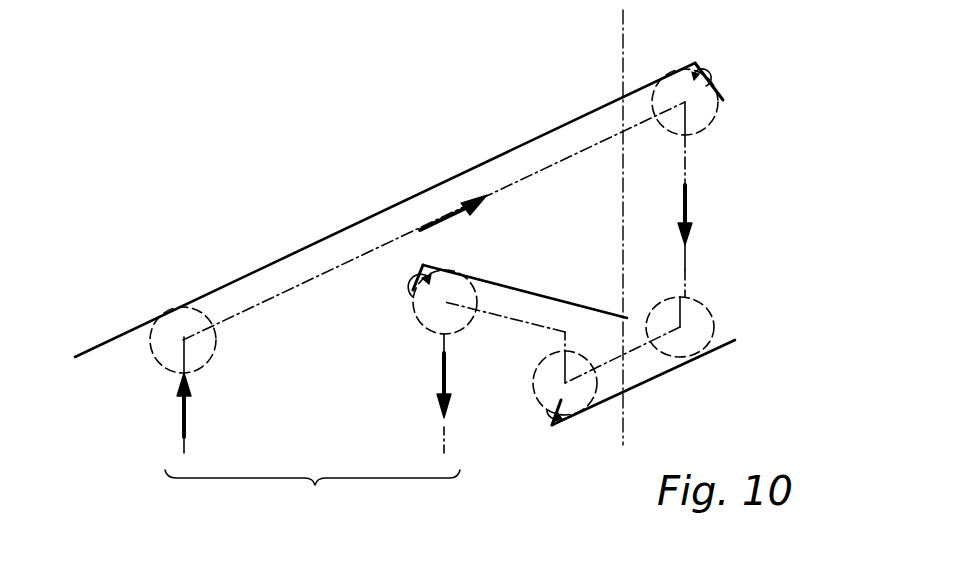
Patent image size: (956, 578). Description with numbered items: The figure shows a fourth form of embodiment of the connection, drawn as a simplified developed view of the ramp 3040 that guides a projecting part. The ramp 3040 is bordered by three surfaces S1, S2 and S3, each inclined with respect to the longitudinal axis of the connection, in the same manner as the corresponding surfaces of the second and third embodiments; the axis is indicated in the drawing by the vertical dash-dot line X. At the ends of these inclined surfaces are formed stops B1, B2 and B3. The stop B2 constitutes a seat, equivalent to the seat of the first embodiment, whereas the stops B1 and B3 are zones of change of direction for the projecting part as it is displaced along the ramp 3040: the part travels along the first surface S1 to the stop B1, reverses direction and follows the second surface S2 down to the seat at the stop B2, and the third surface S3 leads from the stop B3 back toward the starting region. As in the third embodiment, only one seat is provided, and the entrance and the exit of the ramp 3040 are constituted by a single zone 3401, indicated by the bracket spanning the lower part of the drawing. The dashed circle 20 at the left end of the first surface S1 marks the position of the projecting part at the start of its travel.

The ramp 3040 is at (448, 215).
The roller 20 is at (170, 307).
The single zone 3401 is at (312, 494).
The surface S1 is at (277, 261).
The surface S2 is at (702, 357).
The surface S3 is at (503, 287).
The stop B1 is at (720, 85).
The stop B2 is at (543, 408).
The stop B3 is at (417, 307).
The axis X-X' X is at (639, 228).